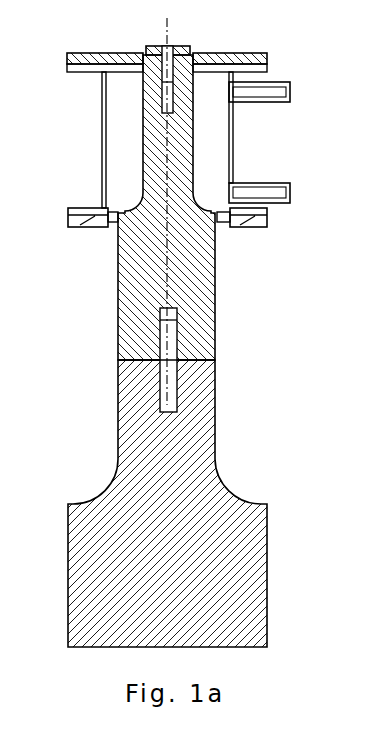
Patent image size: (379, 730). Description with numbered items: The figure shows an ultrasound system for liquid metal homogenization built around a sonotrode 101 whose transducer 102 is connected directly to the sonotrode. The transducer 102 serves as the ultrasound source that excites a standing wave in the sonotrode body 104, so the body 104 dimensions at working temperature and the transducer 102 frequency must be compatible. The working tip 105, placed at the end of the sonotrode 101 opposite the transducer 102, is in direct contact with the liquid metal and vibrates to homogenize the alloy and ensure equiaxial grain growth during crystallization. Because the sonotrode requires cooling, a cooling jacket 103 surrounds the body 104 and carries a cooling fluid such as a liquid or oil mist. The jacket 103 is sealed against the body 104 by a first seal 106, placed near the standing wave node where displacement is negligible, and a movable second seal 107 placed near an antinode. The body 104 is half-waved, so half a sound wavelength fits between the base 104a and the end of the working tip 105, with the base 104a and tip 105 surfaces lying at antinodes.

The sonotrode 101 is at (229, 215).
The transducer 102 is at (183, 468).
The cooling jacket 103 is at (234, 144).
The sonotrode body 104 is at (176, 215).
The base 104a is at (203, 360).
The working tip 105 is at (188, 47).
The first seal 106 is at (262, 222).
The second seal 107 is at (108, 68).